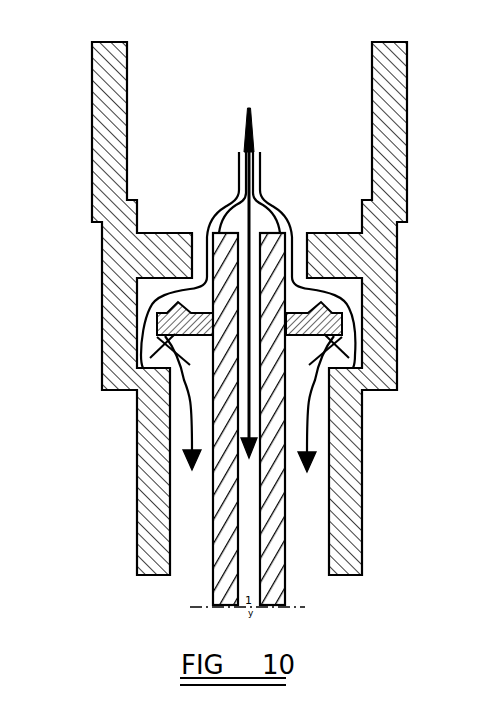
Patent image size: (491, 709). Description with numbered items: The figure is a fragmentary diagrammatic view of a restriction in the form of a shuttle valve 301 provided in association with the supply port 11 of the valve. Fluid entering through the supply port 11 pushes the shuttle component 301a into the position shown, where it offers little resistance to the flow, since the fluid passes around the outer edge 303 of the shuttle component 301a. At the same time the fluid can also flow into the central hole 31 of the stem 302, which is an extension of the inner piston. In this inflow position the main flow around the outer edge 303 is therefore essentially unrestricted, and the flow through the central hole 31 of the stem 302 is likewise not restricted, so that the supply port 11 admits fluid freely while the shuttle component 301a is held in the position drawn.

The supply port 11 is at (307, 113).
The central hole 31 is at (262, 245).
The stem 302 is at (220, 245).
The outer edge 303 is at (353, 318).
The shuttle valve 301 is at (155, 328).
The shuttle component 301a is at (345, 344).